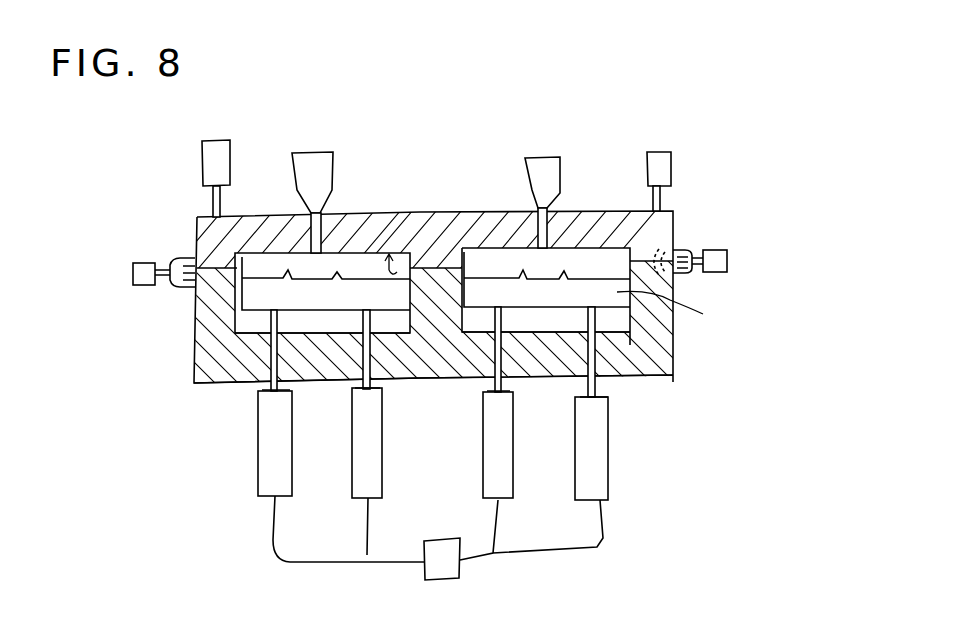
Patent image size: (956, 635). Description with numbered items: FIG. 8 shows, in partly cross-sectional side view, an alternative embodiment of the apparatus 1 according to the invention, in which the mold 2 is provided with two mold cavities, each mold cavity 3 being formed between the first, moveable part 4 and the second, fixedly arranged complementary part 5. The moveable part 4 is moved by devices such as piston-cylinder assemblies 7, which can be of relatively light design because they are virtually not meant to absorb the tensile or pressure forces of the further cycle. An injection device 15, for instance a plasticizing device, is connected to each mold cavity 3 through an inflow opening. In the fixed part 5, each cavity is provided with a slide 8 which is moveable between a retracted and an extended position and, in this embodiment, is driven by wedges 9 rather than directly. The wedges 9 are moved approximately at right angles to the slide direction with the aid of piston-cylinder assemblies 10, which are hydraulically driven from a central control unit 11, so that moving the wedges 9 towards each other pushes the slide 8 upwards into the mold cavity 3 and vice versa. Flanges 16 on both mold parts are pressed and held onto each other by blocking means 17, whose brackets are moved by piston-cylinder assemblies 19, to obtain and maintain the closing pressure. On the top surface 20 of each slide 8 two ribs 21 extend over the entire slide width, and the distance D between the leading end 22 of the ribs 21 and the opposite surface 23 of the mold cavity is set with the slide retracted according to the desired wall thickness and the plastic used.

The apparatus 1 is at (713, 99).
The mold 2 is at (696, 211).
The mold cavity 3 is at (259, 264).
The first, moveable part 4 is at (465, 222).
The second, complementary part 5 is at (670, 360).
The piston-cylinder assemblies 7 is at (231, 158).
The slide 8 is at (322, 305).
The wedges 9 is at (597, 378).
The piston-cylinder assemblies 10 is at (278, 463).
The central control unit 11 is at (447, 570).
The injection device 15 is at (323, 173).
The flanges 16 is at (185, 260).
The blocking means 17 is at (155, 203).
The piston-cylinder assemblies 19 is at (145, 263).
The top surface 20 is at (483, 267).
The ribs 21 is at (567, 275).
The end 22 is at (563, 273).
The surface 23 is at (407, 252).
The distance D is at (340, 267).